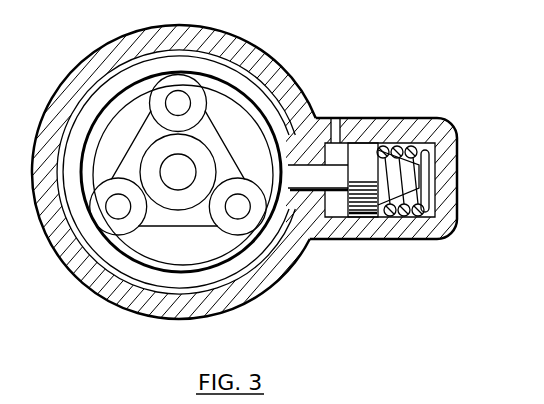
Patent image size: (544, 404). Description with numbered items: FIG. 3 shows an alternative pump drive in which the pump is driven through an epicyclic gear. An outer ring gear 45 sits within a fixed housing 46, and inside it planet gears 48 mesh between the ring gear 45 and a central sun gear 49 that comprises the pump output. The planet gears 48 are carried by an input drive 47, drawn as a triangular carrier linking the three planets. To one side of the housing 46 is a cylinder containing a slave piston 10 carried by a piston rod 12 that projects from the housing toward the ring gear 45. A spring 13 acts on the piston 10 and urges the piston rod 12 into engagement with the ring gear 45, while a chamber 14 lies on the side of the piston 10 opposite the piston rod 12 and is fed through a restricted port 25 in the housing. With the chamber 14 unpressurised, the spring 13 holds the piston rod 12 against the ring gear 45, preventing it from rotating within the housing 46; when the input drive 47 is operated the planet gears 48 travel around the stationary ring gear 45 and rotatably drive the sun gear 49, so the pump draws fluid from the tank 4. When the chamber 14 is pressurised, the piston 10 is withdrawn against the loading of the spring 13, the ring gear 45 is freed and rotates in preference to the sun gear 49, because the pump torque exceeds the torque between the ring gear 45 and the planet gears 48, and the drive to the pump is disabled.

The tank 4 is at (229, 172).
The slave piston 10 is at (361, 197).
The piston rod 12 is at (316, 180).
The spring 13 is at (395, 213).
The chamber 14 is at (337, 203).
The restricted port 25 is at (335, 130).
The outer ring gear 45 is at (152, 277).
The fixed housing 46 is at (103, 279).
The input drive 47 is at (152, 148).
The planet gears 48 is at (106, 222).
The sun gear 49 is at (155, 148).